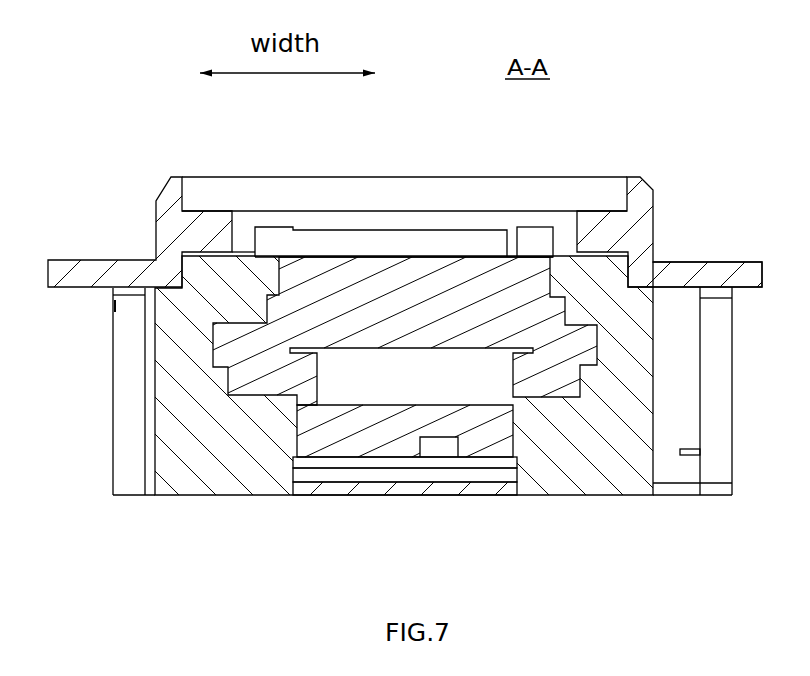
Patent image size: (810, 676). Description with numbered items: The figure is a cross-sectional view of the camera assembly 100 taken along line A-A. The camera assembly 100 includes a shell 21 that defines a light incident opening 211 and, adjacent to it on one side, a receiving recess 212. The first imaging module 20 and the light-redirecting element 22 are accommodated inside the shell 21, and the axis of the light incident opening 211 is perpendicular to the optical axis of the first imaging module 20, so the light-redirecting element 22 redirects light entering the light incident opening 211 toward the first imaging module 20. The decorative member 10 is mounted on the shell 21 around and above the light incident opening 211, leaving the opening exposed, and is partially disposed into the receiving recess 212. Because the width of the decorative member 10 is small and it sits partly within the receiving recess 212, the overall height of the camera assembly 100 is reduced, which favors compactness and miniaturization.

The camera assembly 100 is at (85, 165).
The decorative member 10 is at (642, 225).
The receiving recess 212 is at (632, 285).
The first imaging module 20 is at (272, 491).
The light incident opening 211 is at (421, 233).
The light-redirecting element 22 is at (507, 275).
The shell 21 is at (590, 480).